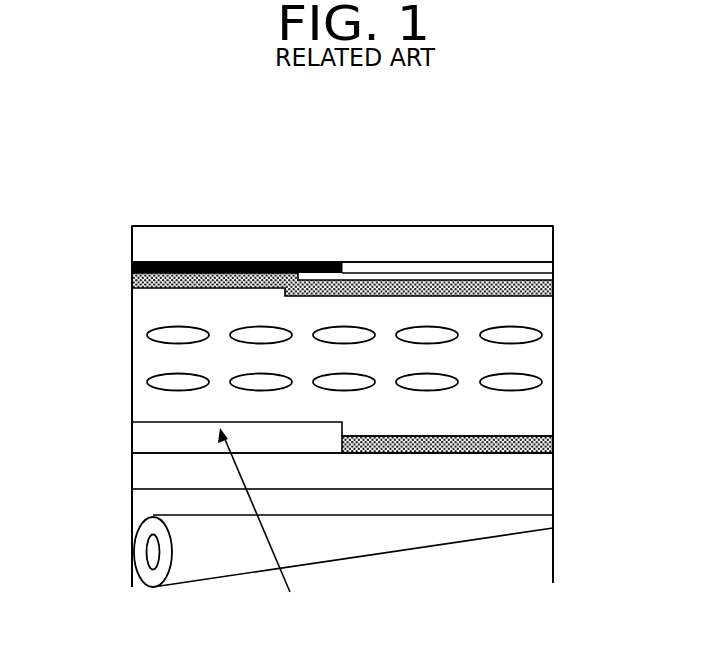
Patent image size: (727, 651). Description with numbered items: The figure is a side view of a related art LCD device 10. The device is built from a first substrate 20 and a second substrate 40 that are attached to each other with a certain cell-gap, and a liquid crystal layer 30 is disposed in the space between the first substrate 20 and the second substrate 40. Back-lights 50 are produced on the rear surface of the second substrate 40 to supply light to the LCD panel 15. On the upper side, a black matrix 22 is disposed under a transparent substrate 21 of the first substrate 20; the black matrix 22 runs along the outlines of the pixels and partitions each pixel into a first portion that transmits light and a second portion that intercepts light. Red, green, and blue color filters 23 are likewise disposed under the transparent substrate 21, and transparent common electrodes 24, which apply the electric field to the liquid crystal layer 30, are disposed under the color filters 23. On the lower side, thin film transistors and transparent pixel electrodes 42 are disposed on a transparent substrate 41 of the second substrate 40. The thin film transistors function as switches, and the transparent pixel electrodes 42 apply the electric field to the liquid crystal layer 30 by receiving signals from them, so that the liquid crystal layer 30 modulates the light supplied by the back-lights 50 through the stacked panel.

The LCD device 10 is at (377, 205).
The LCD panel 15 is at (132, 226).
The first substrate 20 is at (132, 228).
The transparent substrate 21 is at (553, 242).
The black matrix 22 is at (228, 262).
The color filters 23 is at (553, 268).
The transparent common electrodes 24 is at (553, 287).
The liquid crystal layer 30 is at (132, 288).
The second substrate 40 is at (132, 422).
The transparent substrate 41 is at (553, 470).
The transparent pixel electrodes 42 is at (553, 440).
The back-lights 50 is at (376, 548).